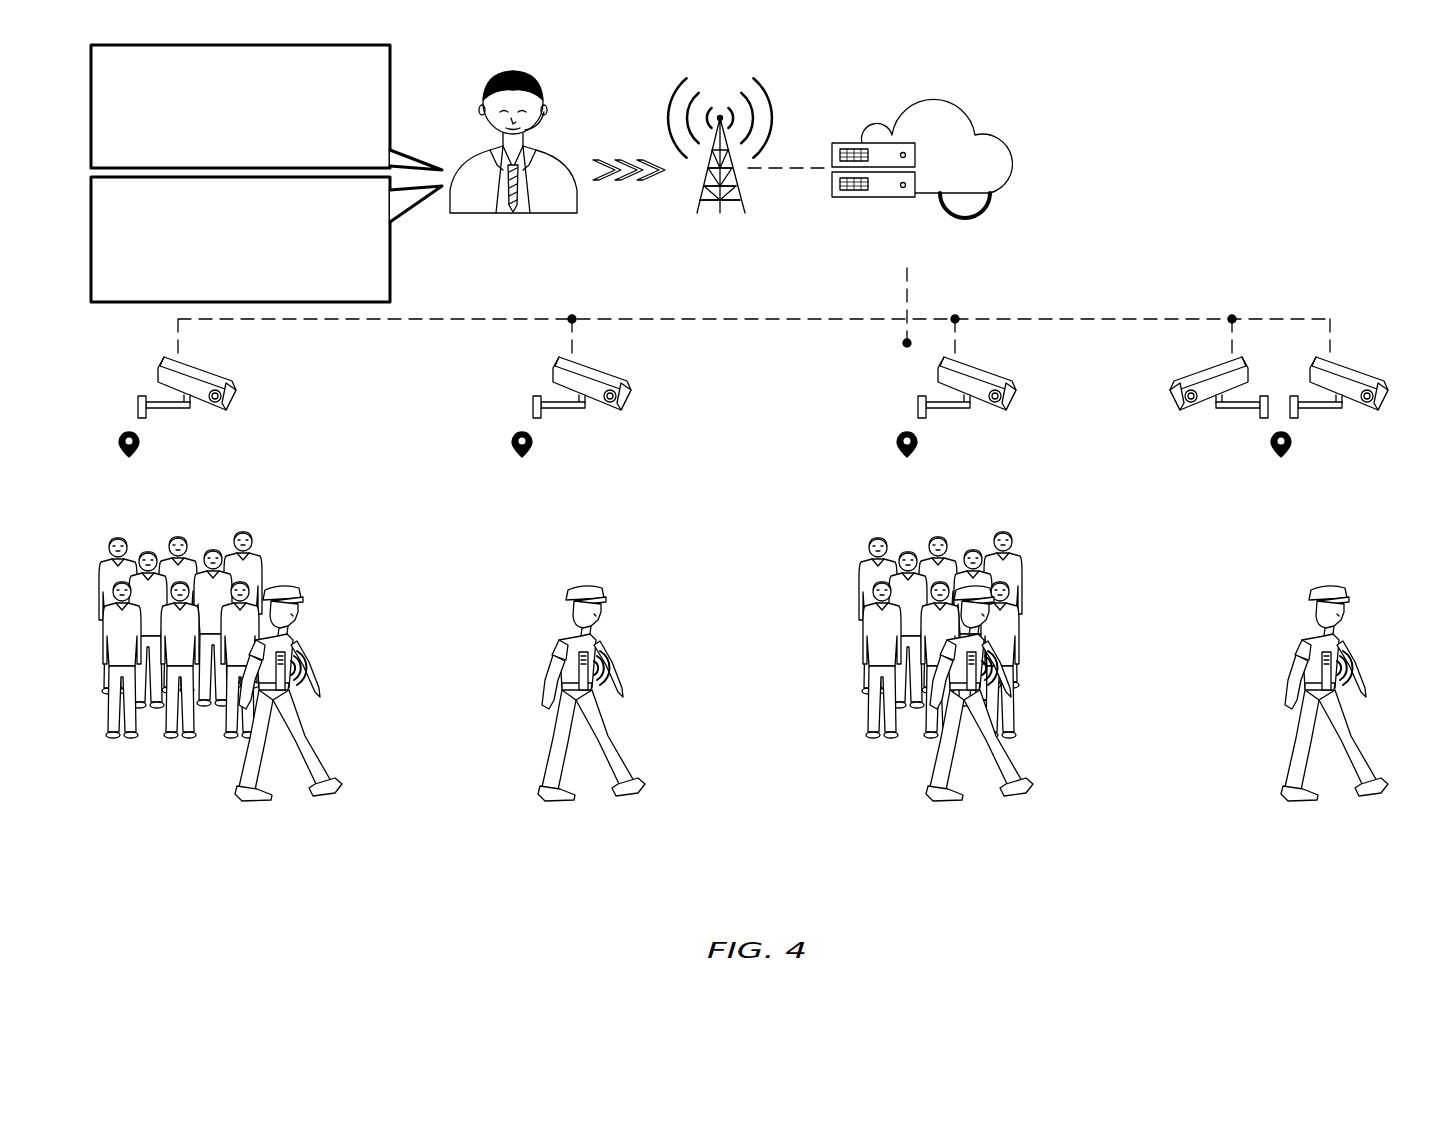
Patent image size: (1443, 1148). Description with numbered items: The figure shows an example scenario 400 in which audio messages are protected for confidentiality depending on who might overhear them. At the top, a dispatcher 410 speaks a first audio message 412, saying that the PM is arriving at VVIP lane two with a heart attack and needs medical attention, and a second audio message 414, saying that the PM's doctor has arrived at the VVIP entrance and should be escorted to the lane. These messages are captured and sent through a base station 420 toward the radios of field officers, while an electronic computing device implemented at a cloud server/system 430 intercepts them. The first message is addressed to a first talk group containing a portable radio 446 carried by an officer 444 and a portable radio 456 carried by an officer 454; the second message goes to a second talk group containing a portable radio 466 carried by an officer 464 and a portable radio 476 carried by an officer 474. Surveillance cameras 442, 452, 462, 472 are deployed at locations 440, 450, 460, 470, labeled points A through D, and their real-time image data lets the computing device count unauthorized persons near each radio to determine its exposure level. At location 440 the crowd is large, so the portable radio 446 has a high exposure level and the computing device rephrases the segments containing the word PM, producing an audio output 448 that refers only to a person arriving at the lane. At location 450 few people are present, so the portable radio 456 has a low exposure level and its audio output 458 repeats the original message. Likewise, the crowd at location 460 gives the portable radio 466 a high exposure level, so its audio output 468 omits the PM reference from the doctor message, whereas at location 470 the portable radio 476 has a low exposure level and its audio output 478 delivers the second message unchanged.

The example scenario 400 is at (1170, 176).
The dispatcher 410 is at (543, 100).
The first audio message 412 is at (392, 74).
The second audio message 414 is at (392, 282).
The base station 420 is at (778, 118).
The cloud server/system 430 is at (1008, 160).
The location 440 is at (222, 448).
The surveillance camera 442 is at (212, 370).
The officer 444 is at (292, 590).
The portable radio 446 is at (294, 700).
The audio output 448 is at (160, 882).
The location 450 is at (618, 448).
The surveillance camera 452 is at (607, 370).
The officer 454 is at (602, 590).
The portable radio 456 is at (597, 700).
The audio output 458 is at (512, 882).
The location 460 is at (1000, 448).
The surveillance camera 462 is at (992, 372).
The officer 464 is at (1000, 770).
The portable radio 466 is at (950, 720).
The audio output 468 is at (1045, 882).
The location 470 is at (1375, 448).
The surveillance camera 472 is at (1312, 362).
The officer 474 is at (1318, 592).
The portable radio 476 is at (1318, 698).
The audio output 478 is at (1240, 882).